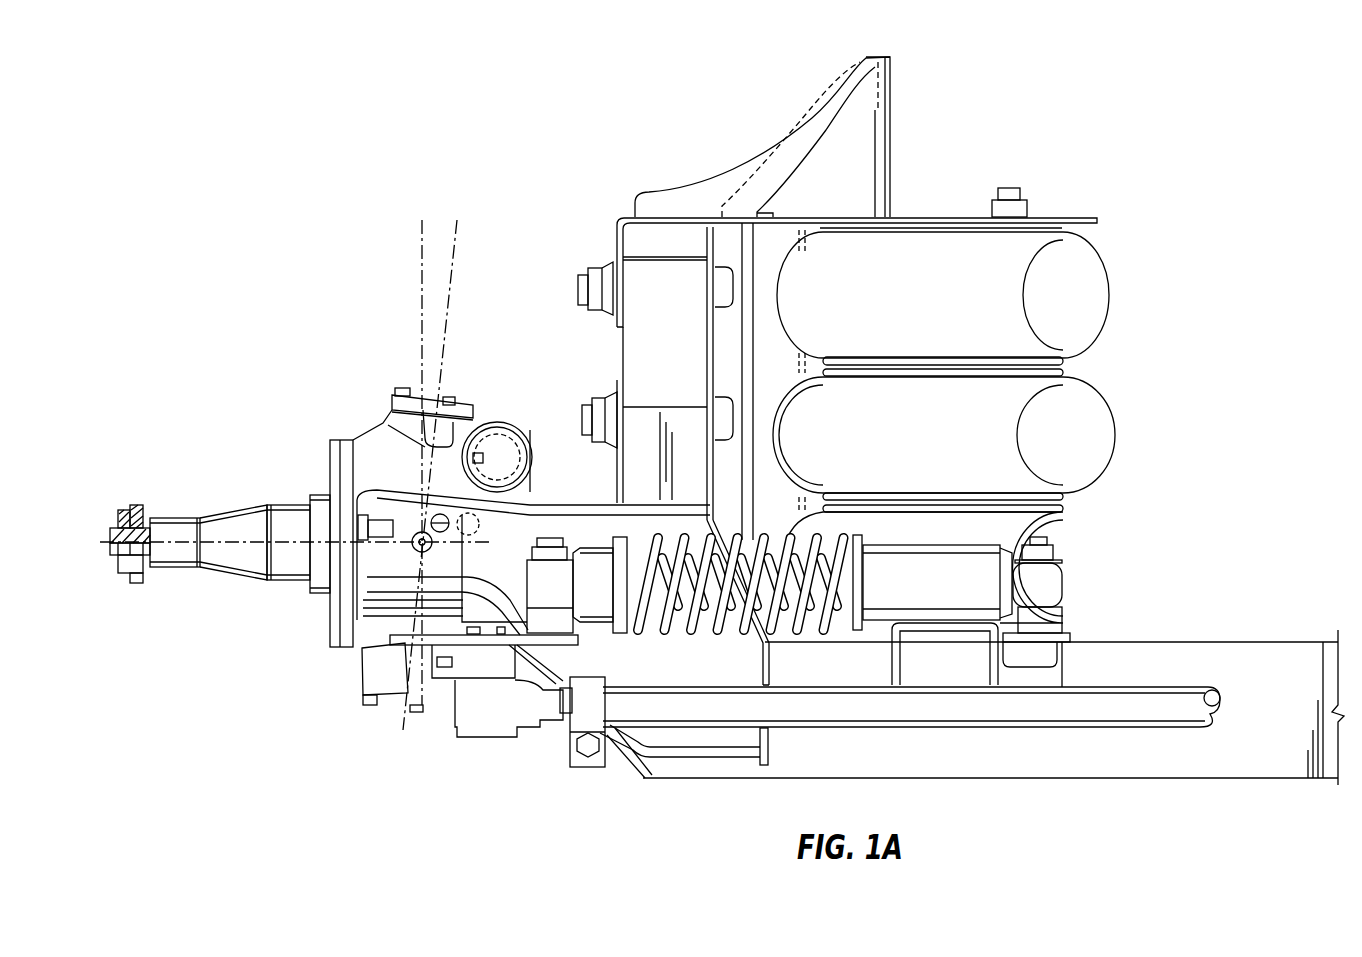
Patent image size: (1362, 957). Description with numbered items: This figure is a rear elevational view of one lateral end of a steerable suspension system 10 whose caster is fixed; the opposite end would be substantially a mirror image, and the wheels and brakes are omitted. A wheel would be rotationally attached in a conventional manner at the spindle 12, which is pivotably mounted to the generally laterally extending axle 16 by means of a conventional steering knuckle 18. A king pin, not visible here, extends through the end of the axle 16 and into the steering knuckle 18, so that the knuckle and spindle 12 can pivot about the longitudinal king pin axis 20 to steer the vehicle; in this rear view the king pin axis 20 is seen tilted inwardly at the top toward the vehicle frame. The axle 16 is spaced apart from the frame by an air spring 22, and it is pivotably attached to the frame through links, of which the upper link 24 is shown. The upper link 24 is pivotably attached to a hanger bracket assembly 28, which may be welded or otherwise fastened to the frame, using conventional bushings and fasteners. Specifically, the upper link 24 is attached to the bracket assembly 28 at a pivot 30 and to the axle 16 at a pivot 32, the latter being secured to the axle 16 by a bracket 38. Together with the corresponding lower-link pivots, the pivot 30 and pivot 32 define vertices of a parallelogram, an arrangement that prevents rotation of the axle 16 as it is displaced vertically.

The suspension system 10 is at (1150, 128).
The spindle 12 is at (230, 577).
The axle 16 is at (1205, 642).
The steering knuckle 18 is at (373, 423).
The king pin axis 20 is at (453, 255).
The air spring 22 is at (1115, 428).
The upper link 24 is at (630, 352).
The hanger bracket assembly 28 is at (617, 233).
The pivot 30 is at (583, 303).
The pivot 32 is at (583, 400).
The bracket 38 is at (612, 483).